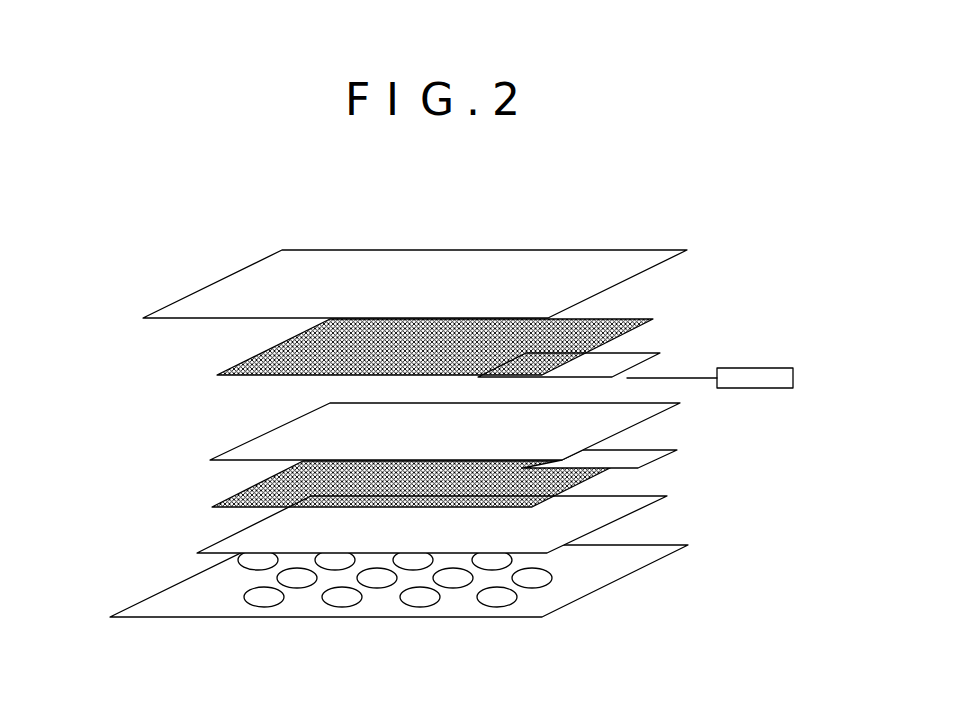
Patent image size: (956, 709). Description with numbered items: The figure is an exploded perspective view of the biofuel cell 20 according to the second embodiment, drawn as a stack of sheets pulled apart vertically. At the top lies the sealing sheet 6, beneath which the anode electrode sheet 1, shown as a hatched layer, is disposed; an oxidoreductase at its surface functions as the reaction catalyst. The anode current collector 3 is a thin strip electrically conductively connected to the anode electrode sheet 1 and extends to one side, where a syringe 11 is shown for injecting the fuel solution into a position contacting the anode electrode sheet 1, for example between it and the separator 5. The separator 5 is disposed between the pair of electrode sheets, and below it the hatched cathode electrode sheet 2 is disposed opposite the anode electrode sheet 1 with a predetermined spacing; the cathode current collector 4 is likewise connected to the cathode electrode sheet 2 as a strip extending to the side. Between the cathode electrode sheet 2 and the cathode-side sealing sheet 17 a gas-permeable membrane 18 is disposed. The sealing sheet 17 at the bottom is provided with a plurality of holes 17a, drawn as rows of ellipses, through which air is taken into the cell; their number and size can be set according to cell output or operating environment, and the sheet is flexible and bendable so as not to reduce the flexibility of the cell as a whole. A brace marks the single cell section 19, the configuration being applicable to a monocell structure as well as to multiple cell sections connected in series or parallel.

The biofuel cell 20 is at (642, 215).
The sealing sheet 6 is at (236, 286).
The anode electrode sheet 1 is at (416, 347).
The anode current collector 3 is at (634, 360).
The syringe 11 is at (752, 372).
The separator 5 is at (632, 421).
The cathode current collector 4 is at (640, 462).
The cathode electrode sheet 2 is at (232, 499).
The cell section 19 is at (420, 429).
The gas-permeable membrane 18 is at (613, 512).
The cathode-side sealing sheet 17 is at (399, 602).
The holes 17a is at (340, 598).